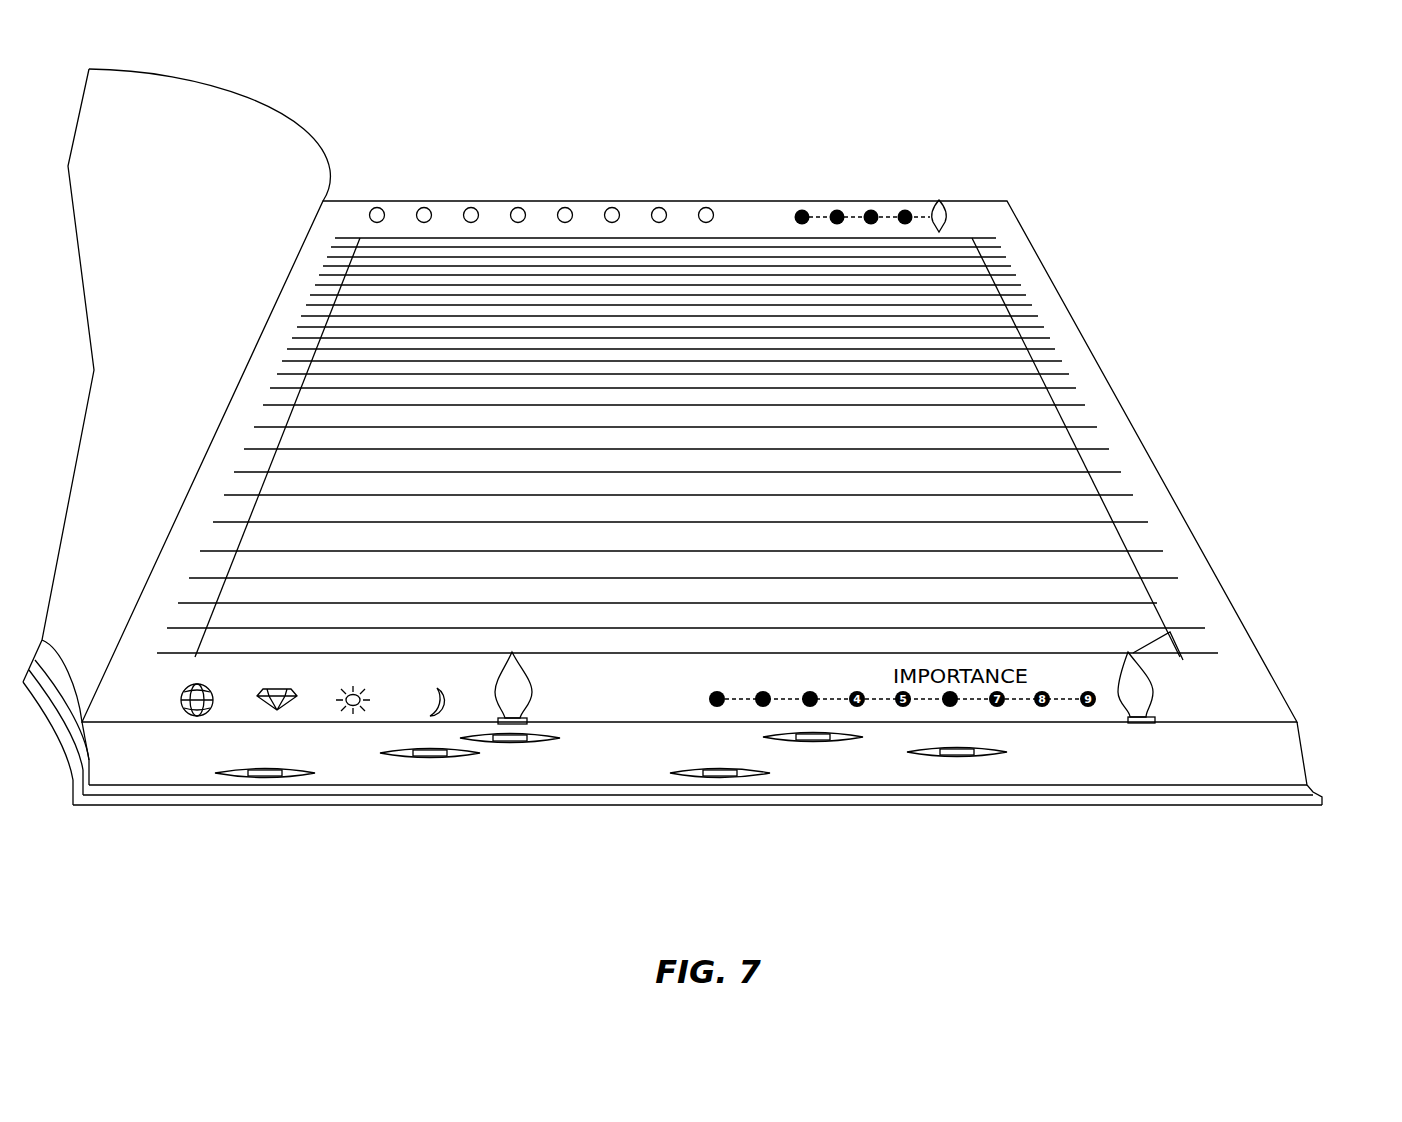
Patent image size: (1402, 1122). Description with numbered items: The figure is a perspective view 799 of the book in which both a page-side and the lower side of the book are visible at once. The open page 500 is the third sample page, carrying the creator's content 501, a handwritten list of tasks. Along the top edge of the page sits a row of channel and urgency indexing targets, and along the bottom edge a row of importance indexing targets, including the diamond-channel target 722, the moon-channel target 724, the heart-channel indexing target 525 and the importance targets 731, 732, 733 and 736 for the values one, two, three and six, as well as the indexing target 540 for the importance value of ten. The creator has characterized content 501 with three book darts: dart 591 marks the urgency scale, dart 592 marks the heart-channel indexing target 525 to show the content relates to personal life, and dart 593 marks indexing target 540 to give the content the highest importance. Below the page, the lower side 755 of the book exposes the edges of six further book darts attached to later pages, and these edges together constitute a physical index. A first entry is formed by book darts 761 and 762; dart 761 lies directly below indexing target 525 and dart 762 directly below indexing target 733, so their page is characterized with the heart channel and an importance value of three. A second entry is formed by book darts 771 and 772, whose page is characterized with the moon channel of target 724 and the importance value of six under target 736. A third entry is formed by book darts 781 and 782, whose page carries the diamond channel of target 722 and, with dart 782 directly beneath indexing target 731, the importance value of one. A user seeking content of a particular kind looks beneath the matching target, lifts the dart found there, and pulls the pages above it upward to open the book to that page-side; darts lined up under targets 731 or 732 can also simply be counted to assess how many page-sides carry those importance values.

The view 799 is at (1073, 132).
The page 500 is at (1005, 240).
The content 501 is at (873, 482).
The book dart 591 is at (939, 200).
The book dart 592 is at (527, 673).
The book dart 593 is at (1164, 631).
The indexing target 540 is at (1160, 688).
The indexing target 525 is at (532, 698).
The indexing target 722 is at (255, 705).
The indexing target 724 is at (433, 713).
The indexing target 731 is at (717, 690).
The indexing target 732 is at (763, 690).
The indexing target 733 is at (810, 690).
The indexing target 736 is at (950, 690).
The lower side 755 is at (1307, 722).
The book dart 781 is at (265, 778).
The book dart 771 is at (425, 760).
The book dart 761 is at (505, 745).
The book dart 782 is at (712, 780).
The book dart 762 is at (810, 742).
The book dart 772 is at (950, 760).